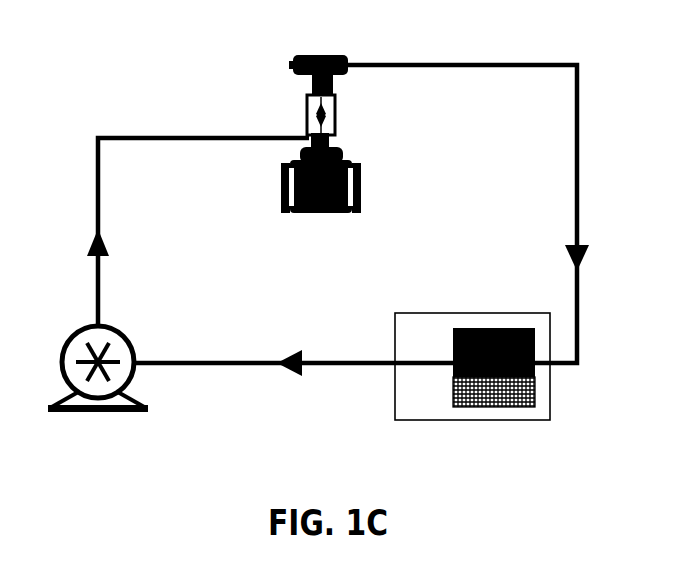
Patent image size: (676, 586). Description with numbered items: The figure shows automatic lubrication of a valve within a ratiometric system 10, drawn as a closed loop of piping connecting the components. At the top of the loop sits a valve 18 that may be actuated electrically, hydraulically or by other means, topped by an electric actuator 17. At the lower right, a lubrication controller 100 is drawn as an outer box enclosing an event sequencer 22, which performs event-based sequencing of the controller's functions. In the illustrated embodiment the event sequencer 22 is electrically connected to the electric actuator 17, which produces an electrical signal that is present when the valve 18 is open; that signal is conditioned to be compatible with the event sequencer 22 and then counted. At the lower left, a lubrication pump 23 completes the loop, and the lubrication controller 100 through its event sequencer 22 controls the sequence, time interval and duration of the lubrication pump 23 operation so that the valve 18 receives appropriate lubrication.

The ratiometric system 10 is at (338, 220).
The electric actuator 17 is at (349, 55).
The valve 18 is at (342, 156).
The event sequencer 22 is at (453, 386).
The lubrication pump 23 is at (70, 334).
The lubrication controller 100 is at (395, 398).